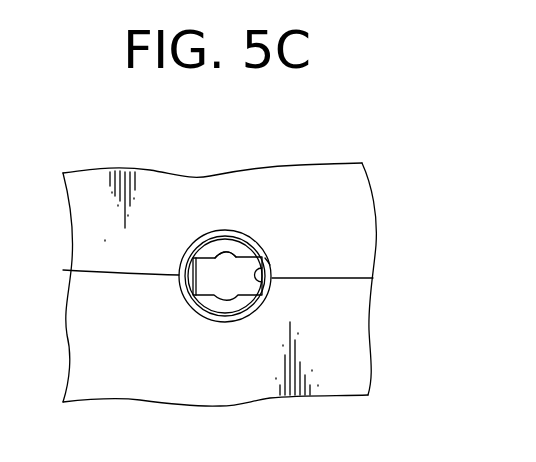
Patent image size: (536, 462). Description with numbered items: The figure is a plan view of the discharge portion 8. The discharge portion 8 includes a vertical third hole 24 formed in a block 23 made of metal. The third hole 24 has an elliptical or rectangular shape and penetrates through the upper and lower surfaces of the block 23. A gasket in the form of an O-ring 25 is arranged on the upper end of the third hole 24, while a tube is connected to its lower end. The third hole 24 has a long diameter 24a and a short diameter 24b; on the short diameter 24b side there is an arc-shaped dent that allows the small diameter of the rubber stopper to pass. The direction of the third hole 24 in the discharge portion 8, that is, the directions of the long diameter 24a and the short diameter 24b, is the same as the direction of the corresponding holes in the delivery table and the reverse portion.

The discharge portion 8 is at (477, 213).
The block 23 is at (340, 265).
The third hole 24 is at (235, 268).
The long diameter 24a is at (265, 258).
The short diameter 24b is at (232, 258).
The gasket (O-ring) 25 is at (188, 252).